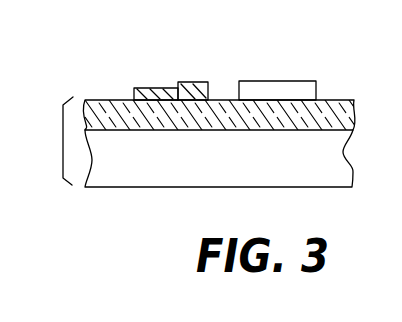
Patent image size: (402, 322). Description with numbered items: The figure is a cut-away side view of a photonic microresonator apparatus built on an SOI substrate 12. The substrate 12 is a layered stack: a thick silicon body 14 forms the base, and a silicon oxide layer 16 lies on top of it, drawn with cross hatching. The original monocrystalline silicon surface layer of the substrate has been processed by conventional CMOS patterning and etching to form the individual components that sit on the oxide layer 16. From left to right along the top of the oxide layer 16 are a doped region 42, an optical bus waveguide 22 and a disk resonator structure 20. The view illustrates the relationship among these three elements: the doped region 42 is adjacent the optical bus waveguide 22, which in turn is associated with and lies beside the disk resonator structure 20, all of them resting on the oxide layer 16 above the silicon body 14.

The SOI substrate 12 is at (63, 133).
The silicon body 14 is at (100, 175).
The silicon oxide layer 16 is at (95, 100).
The disk resonator structure 20 is at (278, 81).
The optical bus waveguide 22 is at (199, 82).
The doped region 42 is at (151, 88).